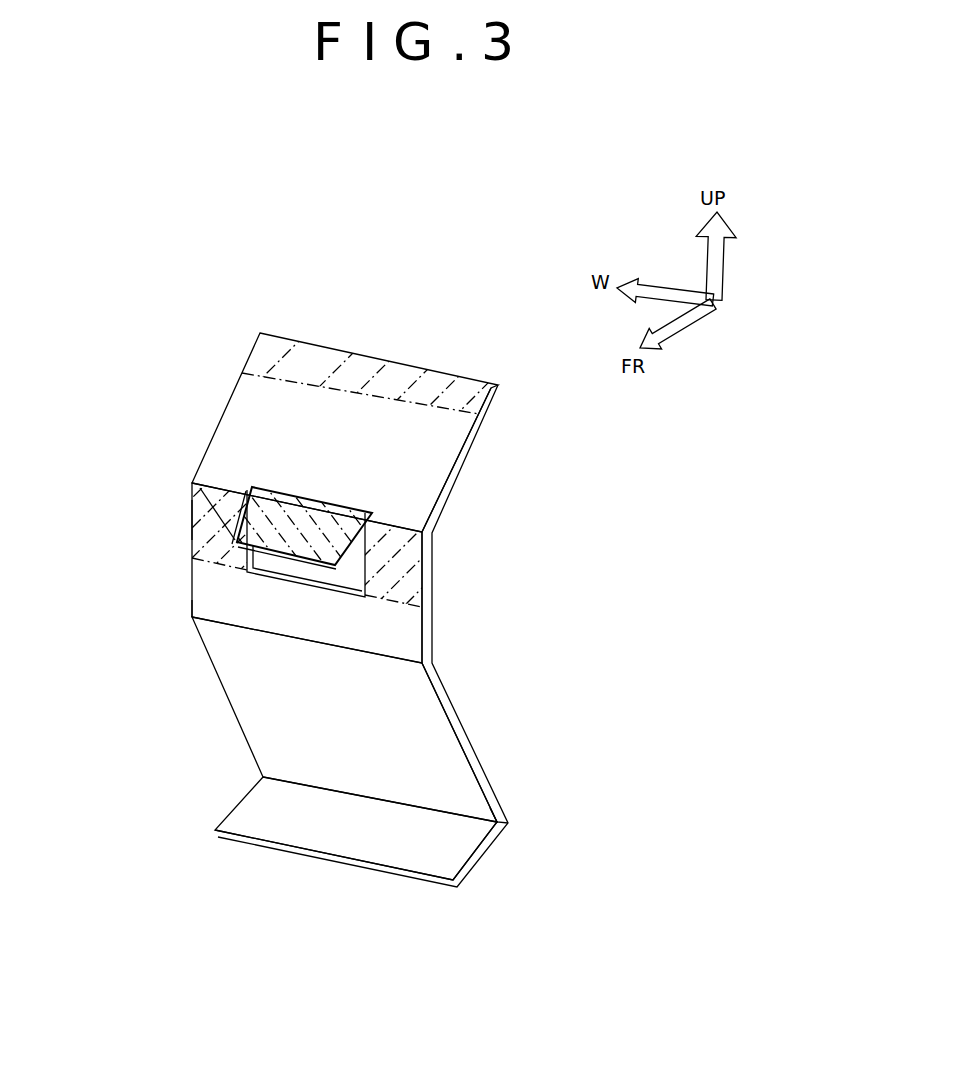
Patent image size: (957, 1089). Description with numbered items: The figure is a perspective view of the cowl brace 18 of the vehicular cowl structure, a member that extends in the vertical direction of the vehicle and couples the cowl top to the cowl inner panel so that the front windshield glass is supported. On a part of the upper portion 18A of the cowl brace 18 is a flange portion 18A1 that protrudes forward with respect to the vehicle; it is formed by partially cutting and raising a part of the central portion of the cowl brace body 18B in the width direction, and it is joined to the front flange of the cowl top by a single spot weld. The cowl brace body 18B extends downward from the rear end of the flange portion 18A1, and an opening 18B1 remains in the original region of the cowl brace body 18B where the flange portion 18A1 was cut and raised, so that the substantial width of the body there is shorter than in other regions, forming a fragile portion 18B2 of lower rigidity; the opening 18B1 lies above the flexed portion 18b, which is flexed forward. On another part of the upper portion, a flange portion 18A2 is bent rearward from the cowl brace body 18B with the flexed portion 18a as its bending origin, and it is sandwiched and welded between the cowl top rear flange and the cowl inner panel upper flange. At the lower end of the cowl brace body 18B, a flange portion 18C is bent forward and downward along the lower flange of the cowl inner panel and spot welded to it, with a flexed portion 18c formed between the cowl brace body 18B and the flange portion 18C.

The cowl brace 18 is at (174, 466).
The upper portion 18A is at (418, 452).
The flange portion 18A1 is at (280, 513).
The flange portion 18A2 is at (352, 368).
The cowl brace body 18B is at (420, 591).
The opening 18B1 is at (356, 568).
The fragile portion 18B2 is at (410, 603).
The flexed portion 18a is at (190, 518).
The flexed portion 18b is at (213, 620).
The flange portion 18C is at (353, 838).
The flexed portion 18c is at (508, 823).